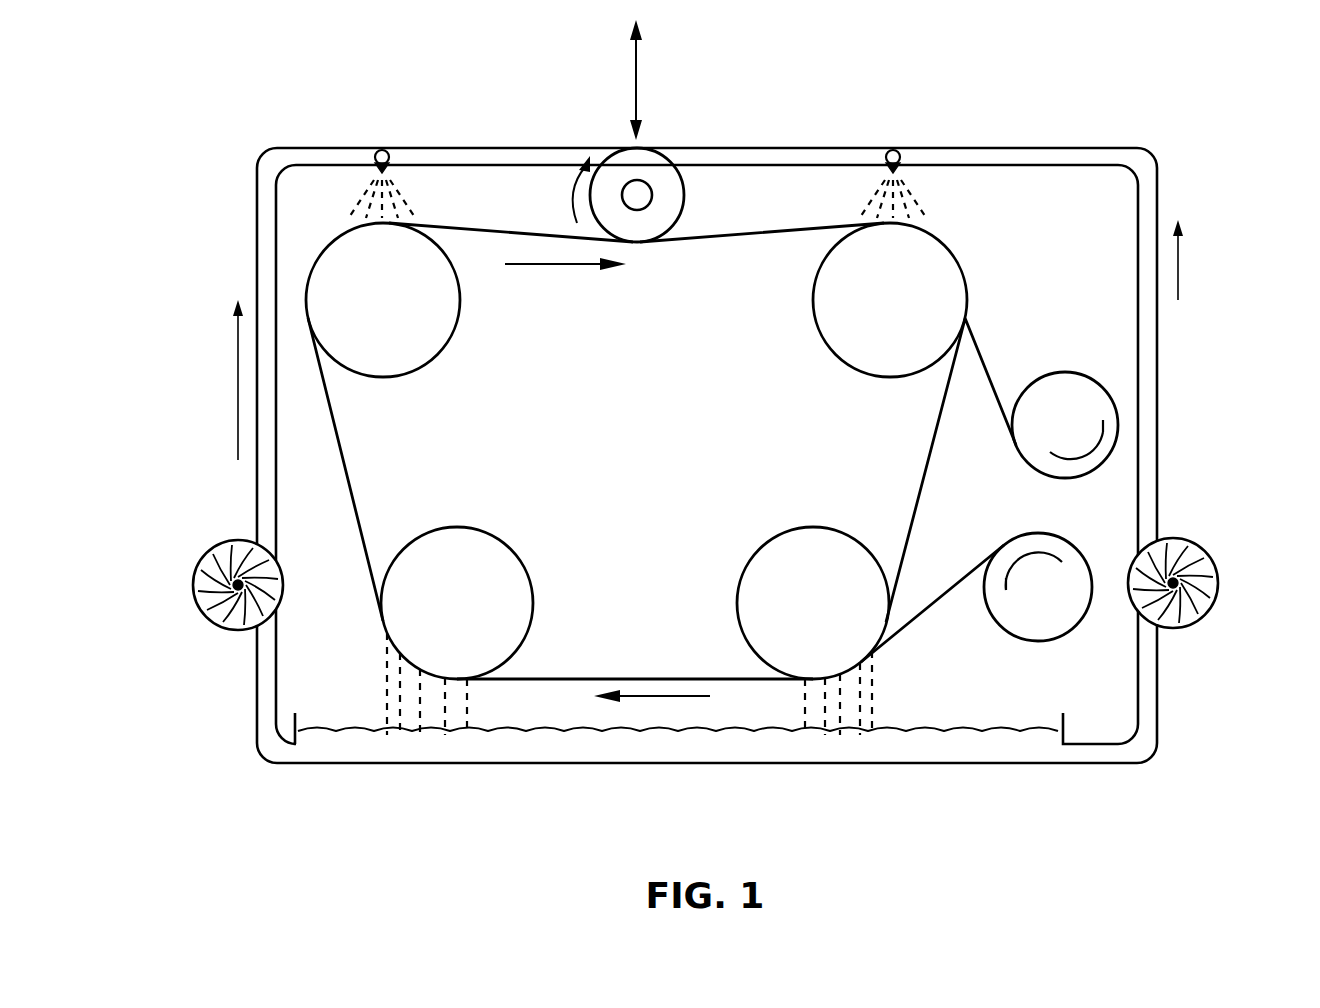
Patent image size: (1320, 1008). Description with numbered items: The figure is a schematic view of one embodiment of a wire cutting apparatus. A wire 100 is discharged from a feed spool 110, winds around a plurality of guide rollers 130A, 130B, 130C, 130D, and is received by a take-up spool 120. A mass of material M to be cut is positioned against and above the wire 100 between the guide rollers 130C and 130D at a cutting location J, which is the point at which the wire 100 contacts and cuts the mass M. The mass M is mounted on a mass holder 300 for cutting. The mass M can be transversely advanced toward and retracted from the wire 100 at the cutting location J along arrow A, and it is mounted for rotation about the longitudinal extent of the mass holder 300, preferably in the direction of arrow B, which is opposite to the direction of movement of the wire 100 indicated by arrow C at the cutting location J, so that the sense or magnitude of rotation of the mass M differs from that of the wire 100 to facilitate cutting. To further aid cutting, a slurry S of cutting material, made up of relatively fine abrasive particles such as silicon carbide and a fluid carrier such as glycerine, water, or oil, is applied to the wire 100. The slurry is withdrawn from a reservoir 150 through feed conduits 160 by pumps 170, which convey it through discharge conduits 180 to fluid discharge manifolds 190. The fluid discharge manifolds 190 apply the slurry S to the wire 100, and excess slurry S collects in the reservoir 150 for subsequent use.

The wire 100 is at (810, 226).
The feed spool 110 is at (1060, 553).
The take-up spool 120 is at (1100, 400).
The guide roller 130A is at (795, 635).
The guide roller 130B is at (385, 635).
The guide roller 130C is at (420, 330).
The guide roller 130D is at (835, 330).
The reservoir 150 is at (570, 740).
The feed conduit 160 is at (258, 690).
The pump 170 is at (195, 583).
The discharge conduit 180 is at (258, 490).
The fluid discharge manifold 190 is at (388, 149).
The mass holder 300 is at (650, 195).
The mass of material M is at (655, 162).
The slurry S is at (397, 195).
The cutting location J is at (645, 243).